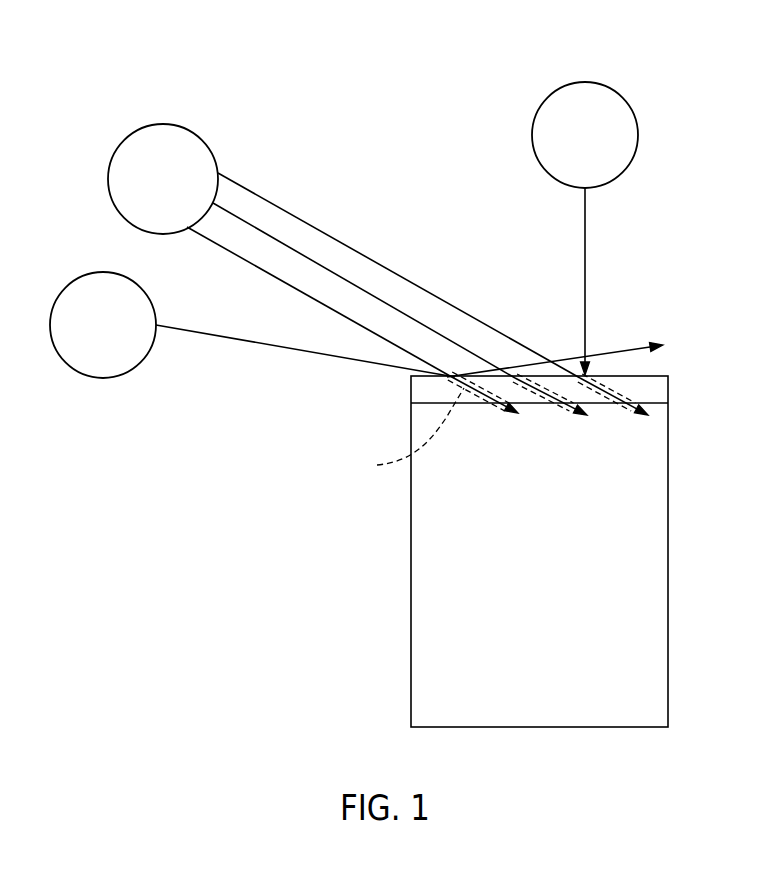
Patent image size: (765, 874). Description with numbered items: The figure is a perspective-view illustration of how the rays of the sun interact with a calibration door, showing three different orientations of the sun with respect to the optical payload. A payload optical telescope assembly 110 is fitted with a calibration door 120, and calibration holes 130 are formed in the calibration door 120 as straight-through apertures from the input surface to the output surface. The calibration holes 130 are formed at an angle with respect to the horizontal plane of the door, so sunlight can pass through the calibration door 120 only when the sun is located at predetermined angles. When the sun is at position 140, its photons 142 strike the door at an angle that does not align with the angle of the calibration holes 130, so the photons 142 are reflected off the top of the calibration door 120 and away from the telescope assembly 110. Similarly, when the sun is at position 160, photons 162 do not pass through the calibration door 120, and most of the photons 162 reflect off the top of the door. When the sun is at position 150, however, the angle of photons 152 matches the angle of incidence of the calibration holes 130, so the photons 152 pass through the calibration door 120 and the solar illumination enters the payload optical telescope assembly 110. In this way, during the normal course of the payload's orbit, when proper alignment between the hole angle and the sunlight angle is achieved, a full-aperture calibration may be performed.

The payload optical telescope assembly 110 is at (418, 568).
The calibration door 120 is at (420, 390).
The calibration holes 130 is at (489, 407).
The sun position 140 is at (102, 378).
The photons 142 is at (237, 338).
The sun position 150 is at (162, 124).
The photons 152 is at (290, 283).
The sun position 160 is at (585, 83).
The photons 162 is at (585, 265).